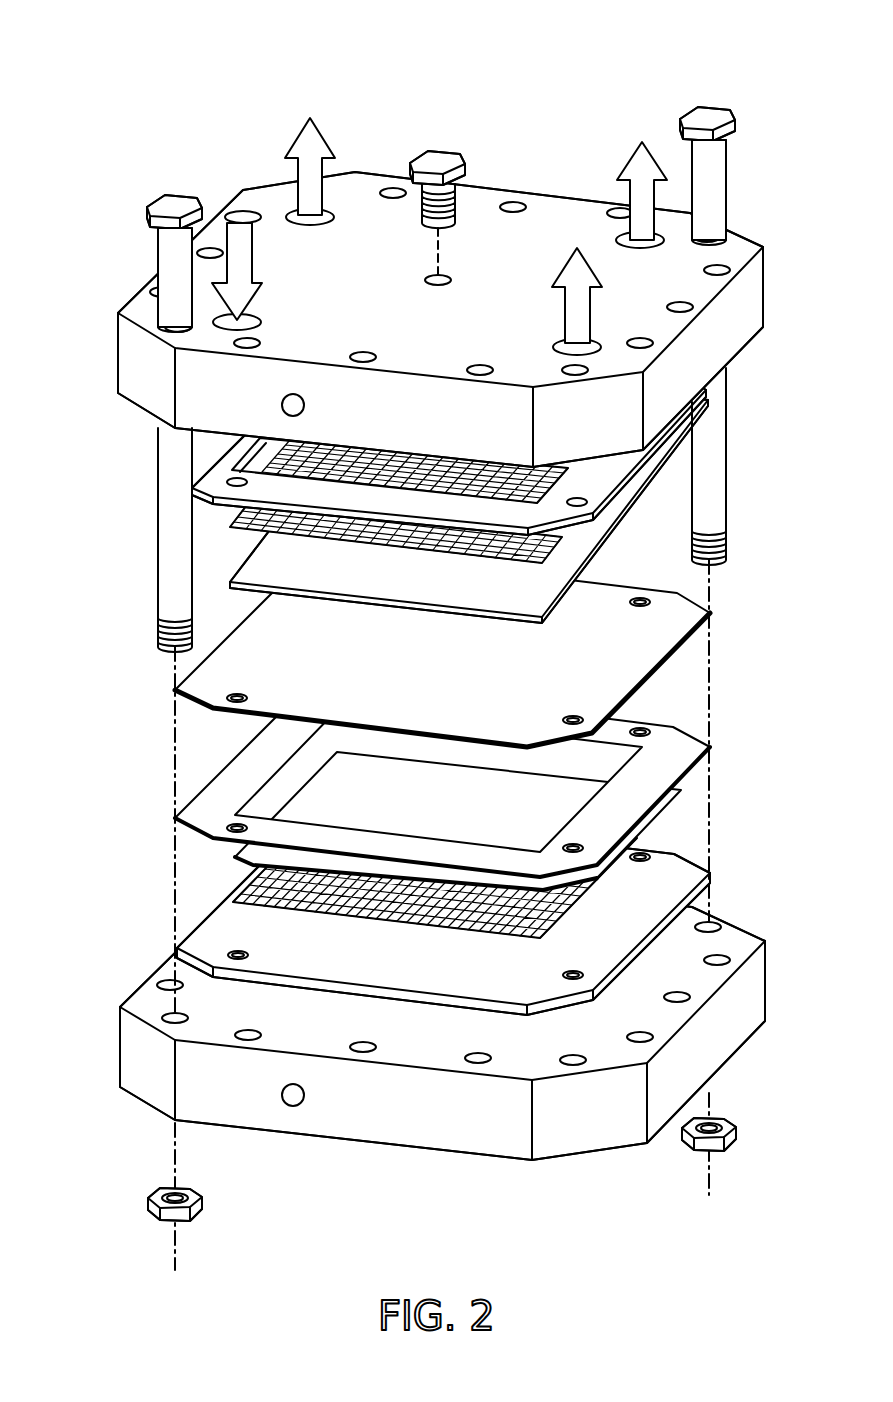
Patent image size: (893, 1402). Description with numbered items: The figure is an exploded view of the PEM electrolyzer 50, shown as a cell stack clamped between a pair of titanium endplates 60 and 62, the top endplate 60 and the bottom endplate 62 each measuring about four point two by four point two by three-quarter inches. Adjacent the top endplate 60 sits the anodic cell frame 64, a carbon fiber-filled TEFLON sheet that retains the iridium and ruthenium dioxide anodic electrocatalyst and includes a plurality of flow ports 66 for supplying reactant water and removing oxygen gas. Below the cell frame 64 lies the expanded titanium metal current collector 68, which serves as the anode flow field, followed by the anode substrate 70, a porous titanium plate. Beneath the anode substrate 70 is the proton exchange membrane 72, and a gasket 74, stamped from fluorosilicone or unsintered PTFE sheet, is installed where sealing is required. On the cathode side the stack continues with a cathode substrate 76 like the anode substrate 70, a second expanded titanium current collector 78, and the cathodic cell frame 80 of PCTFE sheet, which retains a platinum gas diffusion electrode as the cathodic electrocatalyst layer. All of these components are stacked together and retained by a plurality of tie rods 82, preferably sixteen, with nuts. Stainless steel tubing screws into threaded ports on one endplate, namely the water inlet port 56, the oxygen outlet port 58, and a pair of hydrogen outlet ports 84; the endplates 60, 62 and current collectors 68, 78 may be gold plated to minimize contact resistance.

The PEM electrolyzer 50 is at (425, 635).
The water inlet port 56 is at (250, 250).
The oxygen outlet port 58 is at (636, 147).
The top endplate 60 is at (117, 345).
The bottom endplate 62 is at (120, 1047).
The anodic cell frame 64 is at (210, 487).
The flow ports 66 is at (242, 694).
The expanded titanium metal current collector 68 is at (240, 513).
The anode substrate 70 is at (607, 550).
The proton exchange membrane 72 is at (712, 613).
The gasket 74 is at (197, 802).
The cathode substrate 76 is at (235, 857).
The expanded titanium metal current collector 78 is at (235, 903).
The cathodic cell frame 80 is at (707, 877).
The tie rods 82 is at (152, 200).
The hydrogen outlet ports 84 is at (318, 135).